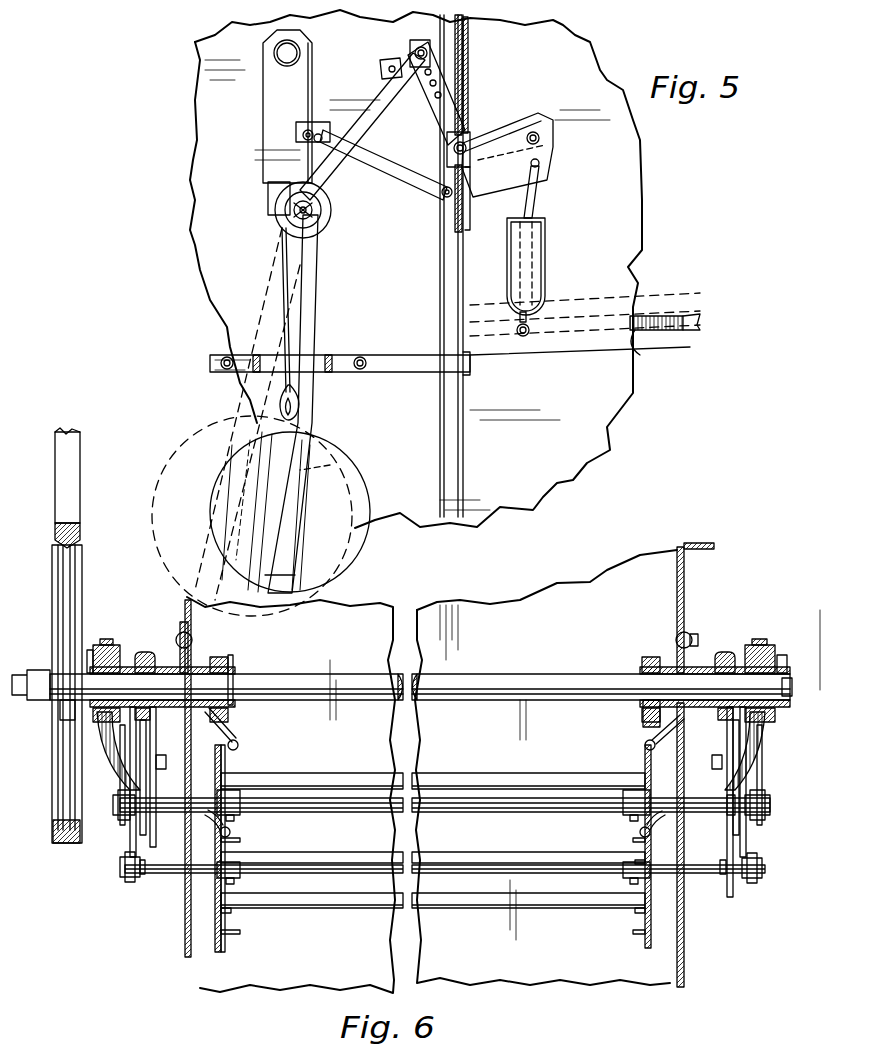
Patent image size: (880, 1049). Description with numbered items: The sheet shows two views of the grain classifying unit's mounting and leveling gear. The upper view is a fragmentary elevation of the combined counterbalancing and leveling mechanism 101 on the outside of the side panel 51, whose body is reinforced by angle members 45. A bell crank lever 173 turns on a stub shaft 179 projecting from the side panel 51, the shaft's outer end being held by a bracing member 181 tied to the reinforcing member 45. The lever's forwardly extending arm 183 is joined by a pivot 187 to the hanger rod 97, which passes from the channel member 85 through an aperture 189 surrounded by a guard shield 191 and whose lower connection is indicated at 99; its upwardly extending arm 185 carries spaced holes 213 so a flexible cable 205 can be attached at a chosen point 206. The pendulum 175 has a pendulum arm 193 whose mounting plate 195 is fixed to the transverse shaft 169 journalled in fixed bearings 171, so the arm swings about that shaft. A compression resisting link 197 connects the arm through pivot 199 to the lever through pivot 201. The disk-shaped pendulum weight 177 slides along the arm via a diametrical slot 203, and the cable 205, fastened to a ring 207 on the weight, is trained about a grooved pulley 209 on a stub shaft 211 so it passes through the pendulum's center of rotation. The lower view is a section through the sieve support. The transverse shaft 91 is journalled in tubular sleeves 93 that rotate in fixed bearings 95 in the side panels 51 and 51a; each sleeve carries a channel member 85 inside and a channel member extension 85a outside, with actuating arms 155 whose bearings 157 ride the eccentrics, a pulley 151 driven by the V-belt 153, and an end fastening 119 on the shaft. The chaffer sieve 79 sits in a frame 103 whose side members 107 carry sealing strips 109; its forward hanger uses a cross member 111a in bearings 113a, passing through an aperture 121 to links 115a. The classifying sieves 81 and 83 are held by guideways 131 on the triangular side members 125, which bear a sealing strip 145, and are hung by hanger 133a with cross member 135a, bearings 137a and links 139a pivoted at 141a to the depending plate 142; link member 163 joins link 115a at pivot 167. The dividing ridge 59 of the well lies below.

In FIG. 5, the angle member 45 is at (450, 458).
In FIG. 5, the side panel 51 is at (215, 178).
In FIG. 6, the side panel 51 is at (688, 590).
In FIG. 6, the side panel 51a is at (186, 607).
In FIG. 6, the dividing ridge 59 is at (75, 768).
In FIG. 6, the chaffer sieve 79 is at (385, 768).
In FIG. 6, the classifying sieve 81 is at (390, 843).
In FIG. 6, the classifying sieve 83 is at (498, 880).
In FIG. 5, the channel member 85 is at (665, 345).
In FIG. 6, the channel member 85 is at (218, 657).
In FIG. 6, the channel member extension 85a is at (143, 652).
In FIG. 6, the shaft 91 is at (377, 662).
In FIG. 6, the tubular sleeve 93 is at (203, 665).
In FIG. 6, the fixed bearing 95 is at (178, 667).
In FIG. 5, the hanger rod 97 is at (534, 208).
In FIG. 5, the pivot pin 99 is at (528, 338).
In FIG. 5, the combined counterbalancing and leveling mechanism 101 is at (392, 272).
In FIG. 6, the chaffer sieve frame 103 is at (226, 755).
In FIG. 6, the side member 107 is at (222, 768).
In FIG. 6, the sealing strip 109 is at (215, 730).
In FIG. 6, the cross member 111a is at (342, 803).
In FIG. 6, the bearing 113a is at (235, 812).
In FIG. 6, the link 115a is at (130, 750).
In FIG. 6, the nut 119 is at (88, 650).
In FIG. 6, the aperture 121 is at (734, 848).
In FIG. 6, the side member 125 is at (224, 840).
In FIG. 6, the guideways and reinforcing members 131 is at (220, 912).
In FIG. 6, the hanger 133a is at (138, 845).
In FIG. 6, the cross member 135a is at (167, 868).
In FIG. 6, the bearing 137a is at (235, 872).
In FIG. 6, the link 139a is at (152, 767).
In FIG. 6, the pivot 141a is at (128, 822).
In FIG. 6, the triangular-shaped plate 142 is at (118, 810).
In FIG. 6, the sealing strip 145 is at (213, 814).
In FIG. 6, the pulley 151 is at (74, 582).
In FIG. 5, the V-belt 153 is at (76, 483).
In FIG. 6, the actuating arm 155 is at (108, 723).
In FIG. 6, the bearing 157 is at (108, 640).
In FIG. 6, the link member 163 is at (142, 786).
In FIG. 6, the pivot 167 is at (166, 762).
In FIG. 5, the shaft 169 is at (270, 187).
In FIG. 5, the fixed bearing 171 is at (280, 205).
In FIG. 5, the bell crank lever 173 is at (466, 108).
In FIG. 5, the pendulum 175 is at (312, 338).
In FIG. 5, the pendulum weight 177 is at (345, 550).
In FIG. 5, the stub shaft 179 is at (470, 132).
In FIG. 5, the bracing member 181 is at (515, 122).
In FIG. 5, the forwardly extending arm 183 is at (537, 186).
In FIG. 5, the upwardly extending arm 185 is at (443, 90).
In FIG. 5, the pivot 187 is at (539, 163).
In FIG. 5, the aperture 189 is at (540, 239).
In FIG. 5, the guard shield 191 is at (538, 270).
In FIG. 5, the pendulum arm 193 is at (300, 317).
In FIG. 5, the mounting plate 195 is at (285, 238).
In FIG. 5, the compression resisting link 197 is at (393, 168).
In FIG. 5, the pivot 199 is at (300, 125).
In FIG. 5, the pivot 201 is at (442, 198).
In FIG. 5, the slot 203 is at (332, 465).
In FIG. 5, the flexible cable 205 is at (392, 108).
In FIG. 5, the point 206 is at (424, 47).
In FIG. 5, the ring 207 is at (298, 408).
In FIG. 5, the grooved pulley 209 is at (322, 217).
In FIG. 5, the stub shaft 211 is at (306, 205).
In FIG. 5, the holes 213 is at (587, 53).